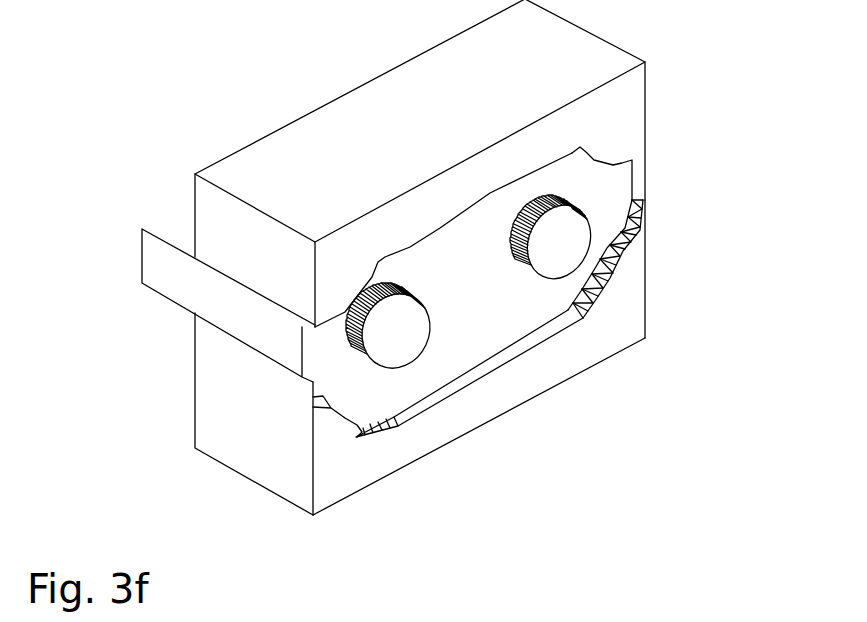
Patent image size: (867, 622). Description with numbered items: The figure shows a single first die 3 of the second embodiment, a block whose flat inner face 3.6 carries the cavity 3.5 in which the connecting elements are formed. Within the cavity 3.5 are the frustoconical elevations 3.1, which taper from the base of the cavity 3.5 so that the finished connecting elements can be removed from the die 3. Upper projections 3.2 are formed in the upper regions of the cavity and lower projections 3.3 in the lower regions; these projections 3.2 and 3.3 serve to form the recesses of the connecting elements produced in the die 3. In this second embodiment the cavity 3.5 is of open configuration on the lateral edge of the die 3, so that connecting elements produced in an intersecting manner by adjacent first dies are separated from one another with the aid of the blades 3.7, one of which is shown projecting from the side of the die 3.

The first die 3 is at (635, 92).
The frustoconical elevations 3.1 is at (553, 267).
The upper projections 3.2 is at (574, 150).
The lower projections 3.3 is at (598, 292).
The cavity 3.5 is at (470, 320).
The flat inner face 3.6 is at (632, 308).
The blades 3.7 is at (167, 275).